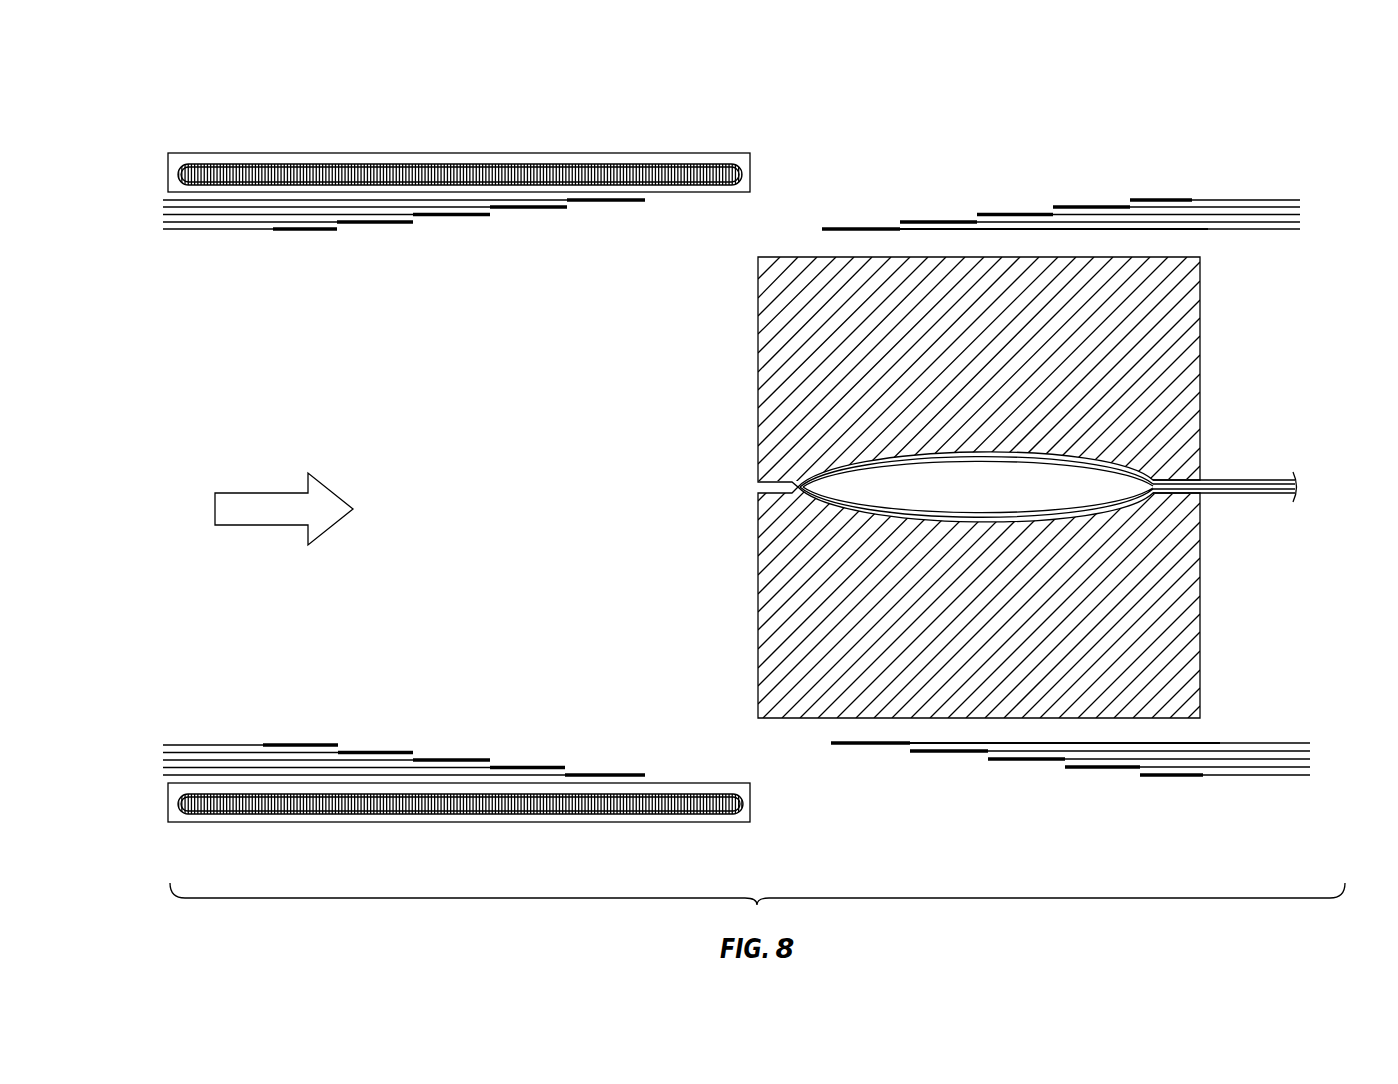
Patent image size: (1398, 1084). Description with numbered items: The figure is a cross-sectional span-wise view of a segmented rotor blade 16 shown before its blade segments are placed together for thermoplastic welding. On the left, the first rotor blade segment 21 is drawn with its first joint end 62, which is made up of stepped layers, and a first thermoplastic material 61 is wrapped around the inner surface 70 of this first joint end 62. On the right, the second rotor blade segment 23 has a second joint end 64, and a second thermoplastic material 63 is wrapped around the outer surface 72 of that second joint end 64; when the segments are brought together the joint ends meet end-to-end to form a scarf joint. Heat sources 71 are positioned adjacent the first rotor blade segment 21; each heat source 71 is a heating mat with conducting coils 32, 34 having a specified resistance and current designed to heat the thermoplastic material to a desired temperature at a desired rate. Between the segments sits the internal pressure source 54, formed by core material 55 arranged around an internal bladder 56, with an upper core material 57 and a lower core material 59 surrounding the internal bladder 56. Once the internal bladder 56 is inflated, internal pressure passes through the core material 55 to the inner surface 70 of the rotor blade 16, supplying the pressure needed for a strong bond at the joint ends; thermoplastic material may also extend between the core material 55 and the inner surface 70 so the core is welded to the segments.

The rotor blade 16 is at (144, 93).
The first rotor blade segment 21 is at (249, 126).
The second rotor blade segment 23 is at (1296, 131).
The heating coil 32 is at (322, 770).
The heating coil 34 is at (296, 200).
The internal pressure source 54 is at (1292, 416).
The core material 55 is at (1177, 383).
The internal bladder 56 is at (1125, 484).
The upper core material 57 is at (1177, 423).
The lower core material 59 is at (1180, 612).
The first thermoplastic material 61 is at (610, 200).
The first joint end 62 is at (473, 200).
The second thermoplastic material 63 is at (918, 228).
The second joint end 64 is at (1150, 200).
The inner surface 70 is at (220, 231).
The heat source 71 is at (176, 172).
The outer surface 72 is at (1225, 200).